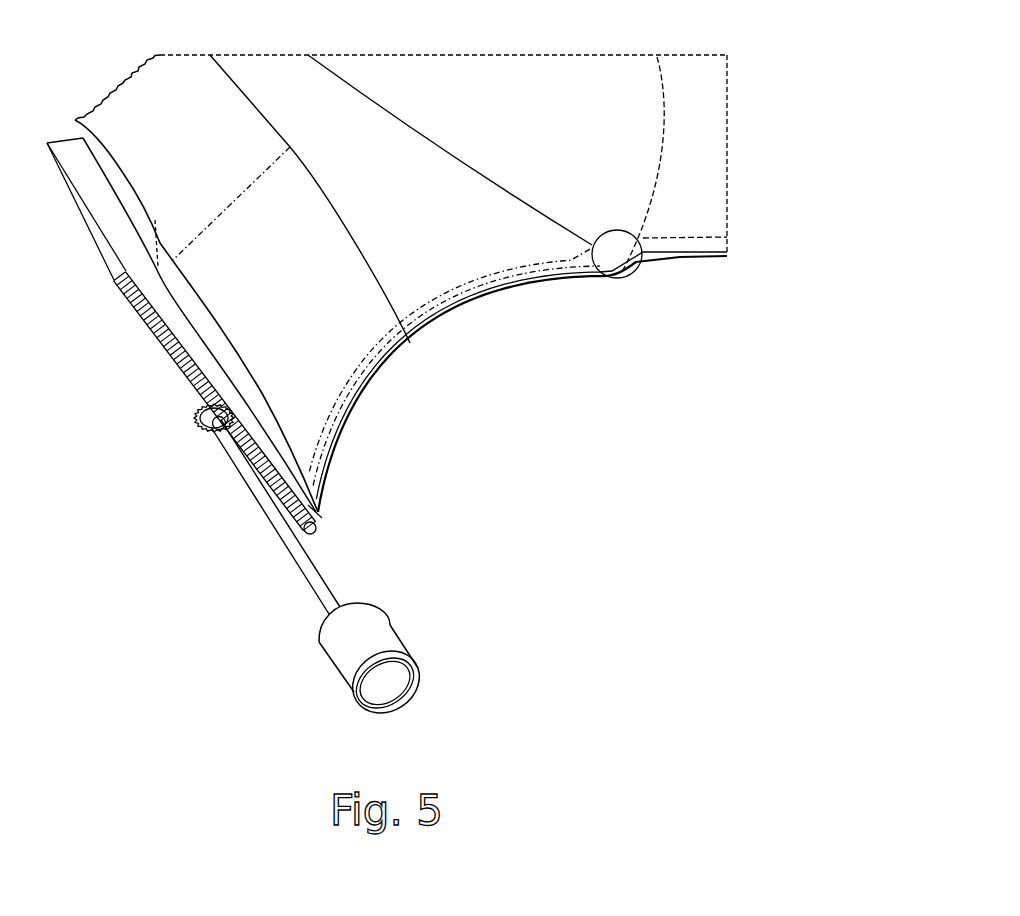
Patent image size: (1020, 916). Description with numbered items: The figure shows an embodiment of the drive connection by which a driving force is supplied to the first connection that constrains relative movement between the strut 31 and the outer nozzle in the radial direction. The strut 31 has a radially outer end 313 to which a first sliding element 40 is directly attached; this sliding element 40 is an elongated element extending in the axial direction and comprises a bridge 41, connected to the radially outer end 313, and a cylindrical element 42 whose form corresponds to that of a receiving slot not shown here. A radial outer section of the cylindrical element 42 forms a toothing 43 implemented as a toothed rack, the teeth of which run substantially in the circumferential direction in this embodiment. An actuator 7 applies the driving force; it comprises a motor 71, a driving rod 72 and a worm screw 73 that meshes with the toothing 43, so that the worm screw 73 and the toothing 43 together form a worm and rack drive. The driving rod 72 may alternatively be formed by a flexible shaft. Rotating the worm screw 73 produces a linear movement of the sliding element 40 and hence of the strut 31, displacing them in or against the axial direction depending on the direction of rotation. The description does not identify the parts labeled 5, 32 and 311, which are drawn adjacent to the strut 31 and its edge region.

The hinge joint 5 is at (602, 213).
The actuator 7 is at (304, 580).
The strut 31 is at (420, 297).
The side panel portion 32 is at (710, 197).
The edge flange 311 is at (500, 297).
The radially outer end of strut 313 is at (187, 298).
The first sliding element 40 is at (322, 520).
The bridge 41 is at (307, 495).
The cylindrical element 42 is at (318, 530).
The toothing 43 is at (172, 356).
The motor 71 is at (392, 628).
The driving rod 72 is at (283, 523).
The worm screw 73 is at (198, 423).